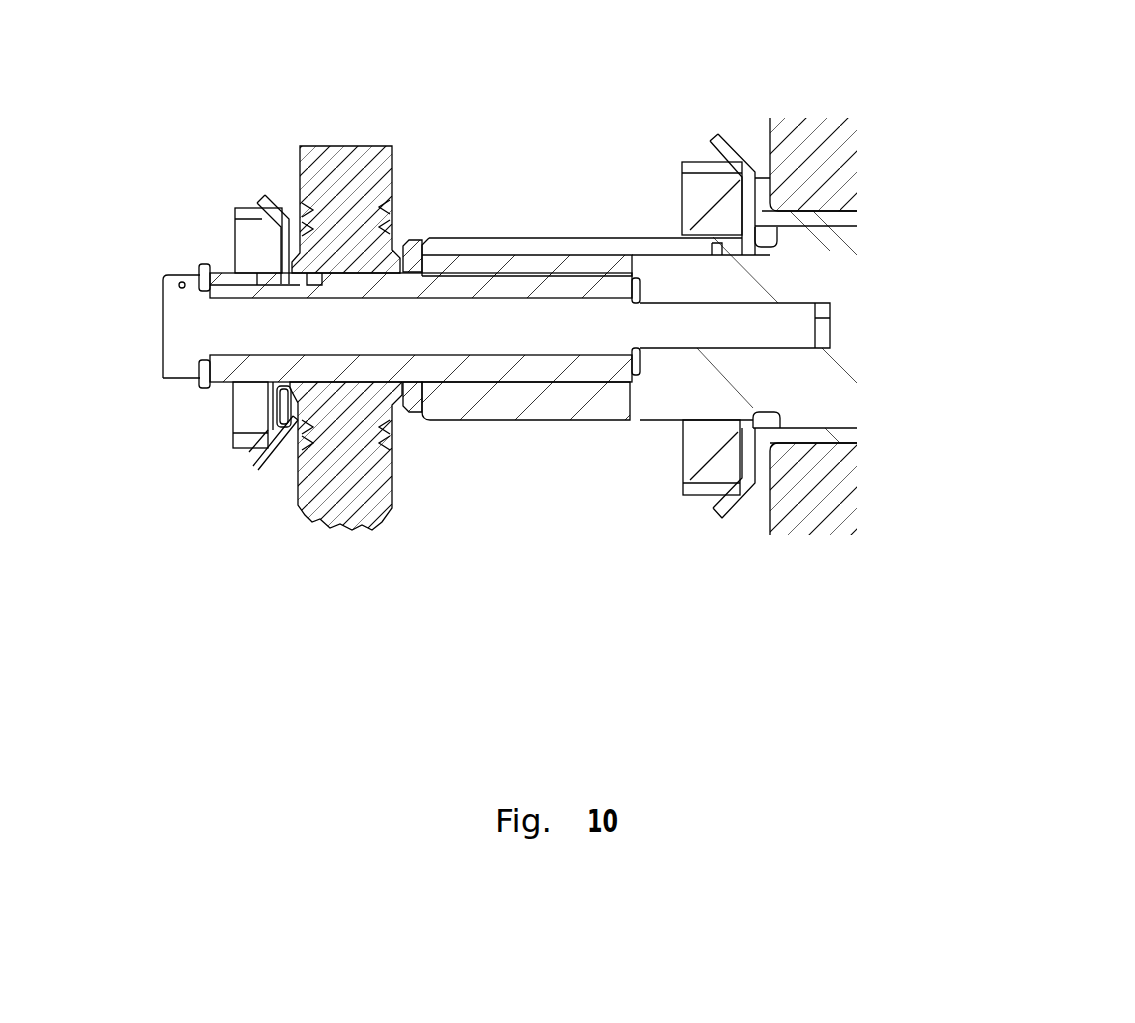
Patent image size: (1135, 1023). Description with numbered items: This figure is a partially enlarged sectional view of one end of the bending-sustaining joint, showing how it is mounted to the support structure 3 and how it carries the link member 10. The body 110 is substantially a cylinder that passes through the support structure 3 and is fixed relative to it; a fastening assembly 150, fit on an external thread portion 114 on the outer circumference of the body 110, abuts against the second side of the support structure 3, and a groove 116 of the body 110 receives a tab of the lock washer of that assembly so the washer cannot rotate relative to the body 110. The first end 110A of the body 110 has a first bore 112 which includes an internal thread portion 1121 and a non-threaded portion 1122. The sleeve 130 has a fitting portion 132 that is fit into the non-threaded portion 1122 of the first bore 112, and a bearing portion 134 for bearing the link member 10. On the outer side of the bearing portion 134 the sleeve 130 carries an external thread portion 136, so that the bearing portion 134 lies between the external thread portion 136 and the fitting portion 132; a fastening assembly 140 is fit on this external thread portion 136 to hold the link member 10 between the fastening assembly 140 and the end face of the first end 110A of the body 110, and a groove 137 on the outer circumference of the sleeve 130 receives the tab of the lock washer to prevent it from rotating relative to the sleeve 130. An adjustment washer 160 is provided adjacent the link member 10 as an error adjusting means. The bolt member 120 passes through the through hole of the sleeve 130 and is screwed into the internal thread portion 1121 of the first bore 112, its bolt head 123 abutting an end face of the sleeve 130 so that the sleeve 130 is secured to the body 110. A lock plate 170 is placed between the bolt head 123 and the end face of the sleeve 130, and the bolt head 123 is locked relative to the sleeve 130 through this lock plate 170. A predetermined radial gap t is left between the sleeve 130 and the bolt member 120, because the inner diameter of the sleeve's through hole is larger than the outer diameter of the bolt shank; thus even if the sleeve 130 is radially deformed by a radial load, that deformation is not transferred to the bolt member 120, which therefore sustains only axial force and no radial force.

The support structure 3 is at (833, 493).
The link member 10 is at (347, 480).
The body 110 is at (786, 388).
The first end 110A is at (482, 222).
The first bore 112 is at (634, 128).
The internal thread portion 1121 is at (668, 303).
The non-threaded portion 1122 is at (605, 277).
The external thread portion 114 is at (627, 420).
The groove 116 is at (543, 247).
The bolt member 120 is at (158, 309).
The bolt head 123 is at (185, 328).
The sleeve 130 is at (481, 373).
The fitting portion 132 is at (525, 365).
The bearing portion 134 is at (357, 387).
The external thread portion 136 is at (268, 448).
The groove 137 is at (227, 278).
The fastening assembly 140 is at (252, 411).
The fastening assembly 150 is at (713, 461).
The adjustment washer 160 is at (413, 231).
The lock plate 170 is at (205, 401).
The radial gap t is at (573, 360).